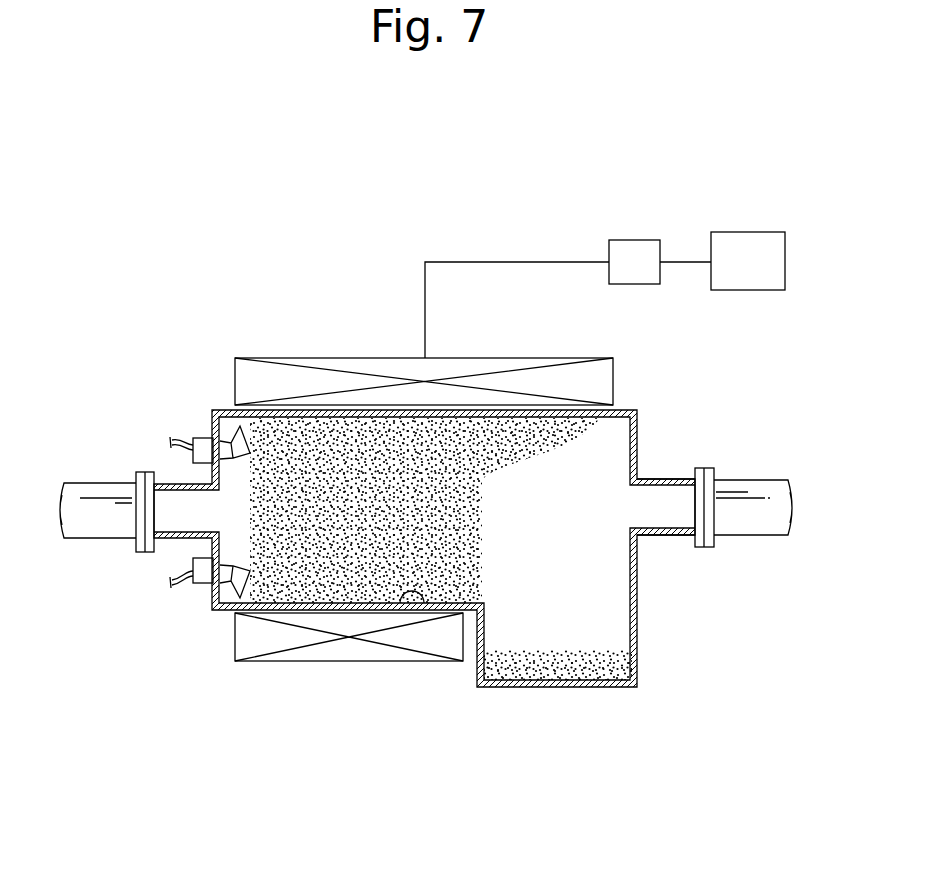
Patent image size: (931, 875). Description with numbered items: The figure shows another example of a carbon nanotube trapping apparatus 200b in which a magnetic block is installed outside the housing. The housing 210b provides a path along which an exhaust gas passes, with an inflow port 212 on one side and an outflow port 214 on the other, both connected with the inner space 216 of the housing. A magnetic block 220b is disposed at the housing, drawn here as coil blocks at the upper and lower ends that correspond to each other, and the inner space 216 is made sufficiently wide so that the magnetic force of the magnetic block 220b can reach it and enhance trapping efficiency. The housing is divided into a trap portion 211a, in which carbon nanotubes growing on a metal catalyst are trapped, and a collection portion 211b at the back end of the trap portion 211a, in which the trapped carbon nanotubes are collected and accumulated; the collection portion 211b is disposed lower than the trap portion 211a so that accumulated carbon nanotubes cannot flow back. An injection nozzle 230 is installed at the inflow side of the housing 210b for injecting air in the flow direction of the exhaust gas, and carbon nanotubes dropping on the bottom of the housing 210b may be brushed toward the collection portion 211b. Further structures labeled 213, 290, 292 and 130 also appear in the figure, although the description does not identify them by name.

The carbon nanotube trapping apparatus 200b is at (218, 204).
The housing 210b is at (213, 618).
The trap portion 211a is at (462, 762).
The collection portion 211b is at (632, 762).
The inflow port 212 is at (173, 540).
The drain 213 is at (424, 598).
The outflow port 214 is at (665, 479).
The inner space 216 is at (532, 512).
The magnetic block 220b is at (355, 666).
The injection nozzle 230 is at (203, 435).
The controller 290 is at (746, 232).
The power supply 292 is at (634, 240).
The exhaust pipe 130 is at (749, 480).